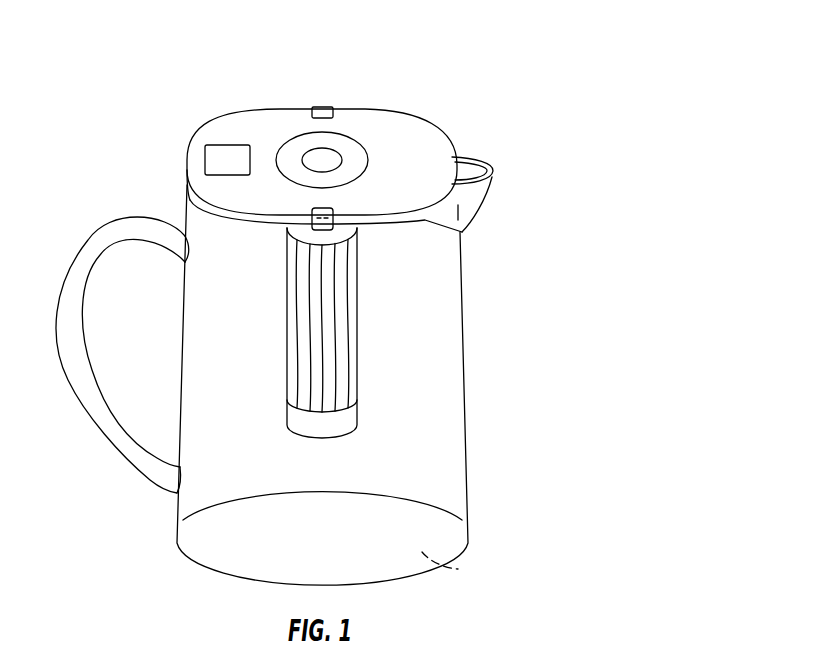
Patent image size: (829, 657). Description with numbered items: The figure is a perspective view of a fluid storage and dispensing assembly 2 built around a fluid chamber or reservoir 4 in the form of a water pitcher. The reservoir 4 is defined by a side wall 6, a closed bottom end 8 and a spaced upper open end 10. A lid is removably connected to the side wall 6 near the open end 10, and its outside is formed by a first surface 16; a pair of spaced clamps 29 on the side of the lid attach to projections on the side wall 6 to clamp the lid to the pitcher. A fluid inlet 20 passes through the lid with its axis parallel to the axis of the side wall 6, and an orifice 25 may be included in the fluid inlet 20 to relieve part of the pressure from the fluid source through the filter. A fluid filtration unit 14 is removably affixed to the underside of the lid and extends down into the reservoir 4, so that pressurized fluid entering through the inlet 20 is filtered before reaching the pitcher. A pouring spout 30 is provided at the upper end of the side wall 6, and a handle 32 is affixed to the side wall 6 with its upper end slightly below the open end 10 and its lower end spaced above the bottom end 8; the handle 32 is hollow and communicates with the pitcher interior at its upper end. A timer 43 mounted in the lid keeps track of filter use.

The fluid storage and dispensing assembly 2 is at (468, 99).
The fluid chamber or reservoir 4 is at (470, 358).
The side wall 6 is at (468, 412).
The closed bottom end 8 is at (458, 569).
The upper open end 10 is at (463, 231).
The fluid filtration unit 14 is at (364, 340).
The first surface 16 is at (437, 162).
The fluid inlet 20 is at (338, 153).
The orifice 25 is at (301, 157).
The clamps 29 is at (320, 224).
The pouring spout 30 is at (475, 192).
The handle 32 is at (100, 237).
The timer 43 is at (223, 153).